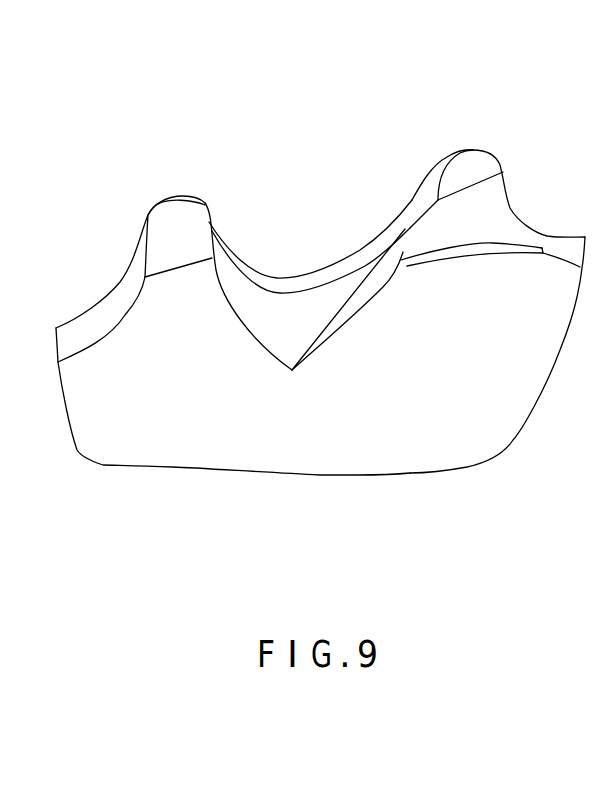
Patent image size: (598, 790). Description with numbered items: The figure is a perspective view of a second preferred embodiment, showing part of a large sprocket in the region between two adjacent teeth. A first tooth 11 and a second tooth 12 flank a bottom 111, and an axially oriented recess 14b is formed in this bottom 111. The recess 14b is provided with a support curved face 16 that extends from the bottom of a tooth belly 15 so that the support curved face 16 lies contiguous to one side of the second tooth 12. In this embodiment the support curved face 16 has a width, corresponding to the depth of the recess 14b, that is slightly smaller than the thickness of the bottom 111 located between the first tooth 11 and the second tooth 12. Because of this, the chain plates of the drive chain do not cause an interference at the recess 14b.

The first tooth 11 is at (173, 243).
The second tooth 12 is at (483, 212).
The recess 14b is at (280, 327).
The bottom 111 is at (312, 282).
The tooth belly 15 is at (425, 208).
The support curved face 16 is at (403, 253).